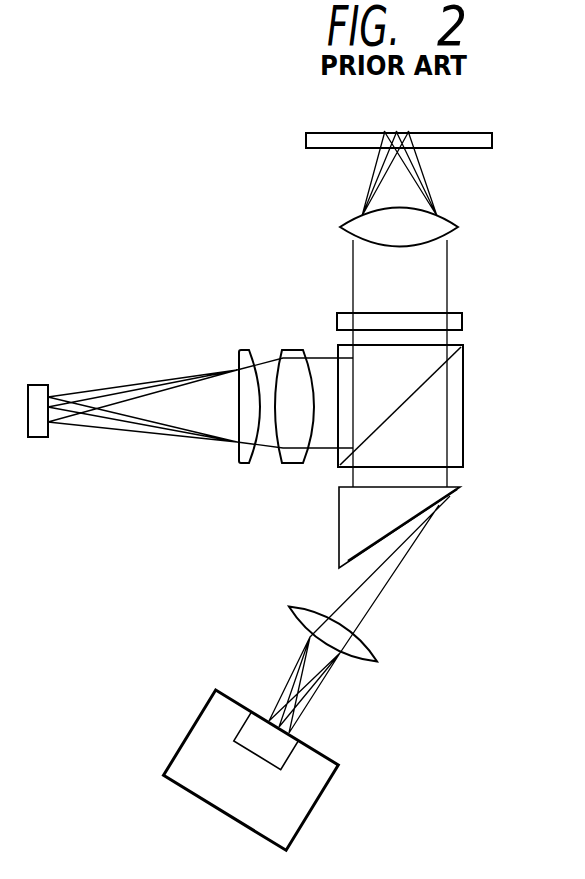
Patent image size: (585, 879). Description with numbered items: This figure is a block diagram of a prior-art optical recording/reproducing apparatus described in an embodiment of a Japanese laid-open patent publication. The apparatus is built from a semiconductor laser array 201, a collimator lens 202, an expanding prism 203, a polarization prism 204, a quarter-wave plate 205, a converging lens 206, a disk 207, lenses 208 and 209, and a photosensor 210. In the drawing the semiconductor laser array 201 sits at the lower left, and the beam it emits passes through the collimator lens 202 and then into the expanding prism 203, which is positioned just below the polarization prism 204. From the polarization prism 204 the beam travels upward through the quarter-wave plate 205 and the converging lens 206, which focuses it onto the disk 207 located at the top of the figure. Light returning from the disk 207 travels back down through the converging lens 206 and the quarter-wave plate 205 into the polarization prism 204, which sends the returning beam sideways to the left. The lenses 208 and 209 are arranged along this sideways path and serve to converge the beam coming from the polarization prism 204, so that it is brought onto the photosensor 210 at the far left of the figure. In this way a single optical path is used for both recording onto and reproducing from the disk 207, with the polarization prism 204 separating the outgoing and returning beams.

The semiconductor laser array 201 is at (320, 792).
The collimator lens 202 is at (370, 660).
The expanding prism 203 is at (418, 500).
The polarization prism 204 is at (457, 383).
The λ/4 plate 205 is at (462, 321).
The converging lens 206 is at (458, 227).
The disk 207 is at (492, 141).
The lens 208 is at (293, 350).
The lens 209 is at (247, 350).
The photosensor 210 is at (33, 385).